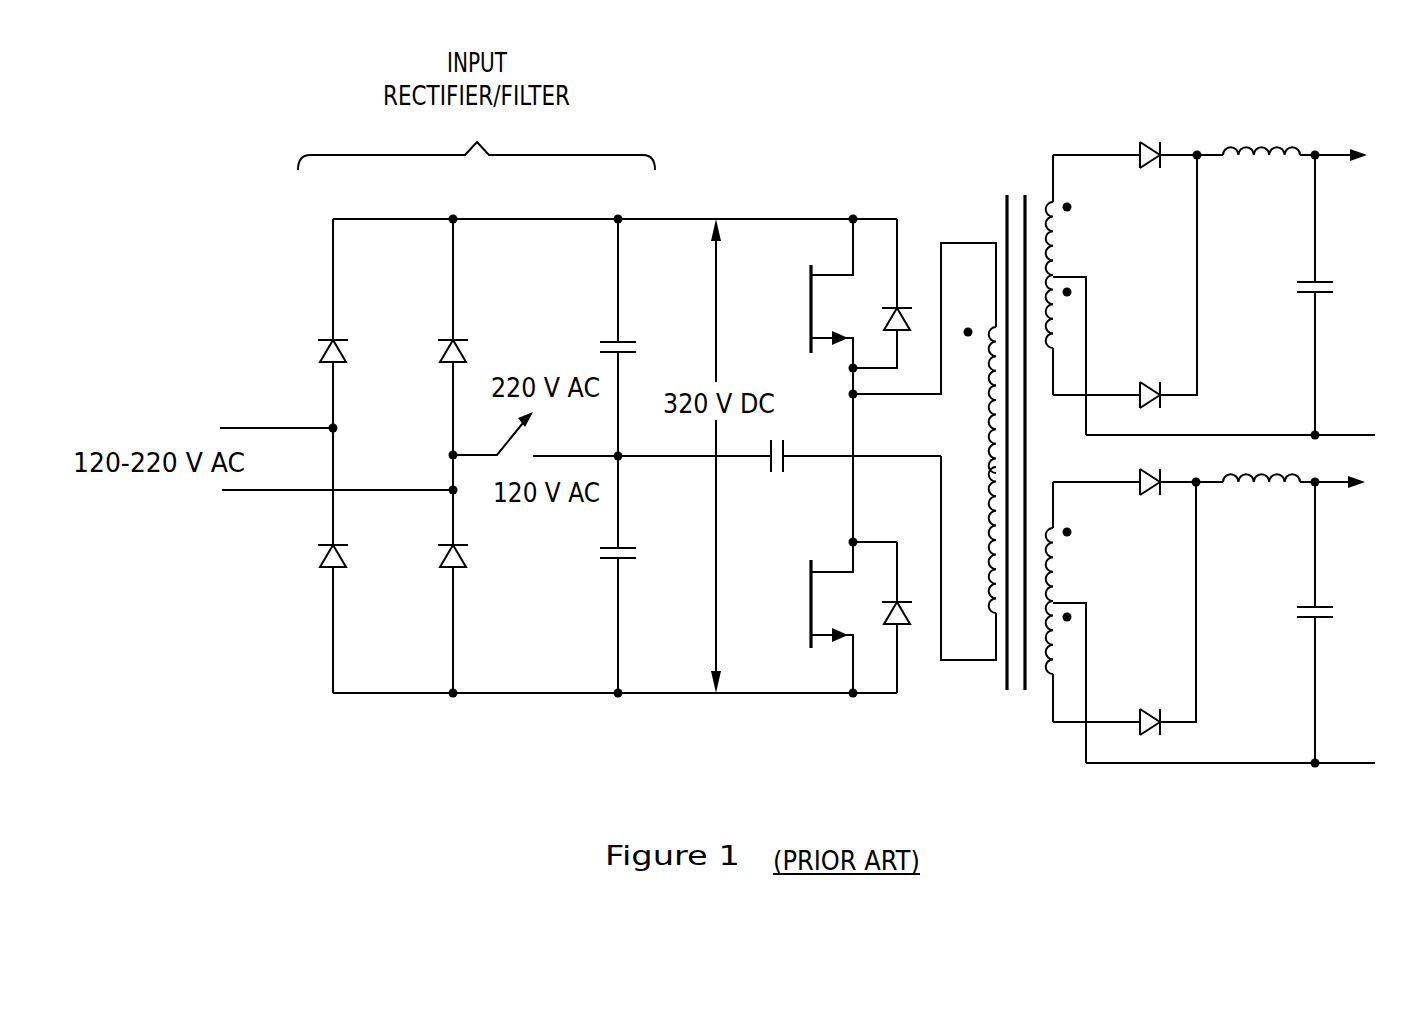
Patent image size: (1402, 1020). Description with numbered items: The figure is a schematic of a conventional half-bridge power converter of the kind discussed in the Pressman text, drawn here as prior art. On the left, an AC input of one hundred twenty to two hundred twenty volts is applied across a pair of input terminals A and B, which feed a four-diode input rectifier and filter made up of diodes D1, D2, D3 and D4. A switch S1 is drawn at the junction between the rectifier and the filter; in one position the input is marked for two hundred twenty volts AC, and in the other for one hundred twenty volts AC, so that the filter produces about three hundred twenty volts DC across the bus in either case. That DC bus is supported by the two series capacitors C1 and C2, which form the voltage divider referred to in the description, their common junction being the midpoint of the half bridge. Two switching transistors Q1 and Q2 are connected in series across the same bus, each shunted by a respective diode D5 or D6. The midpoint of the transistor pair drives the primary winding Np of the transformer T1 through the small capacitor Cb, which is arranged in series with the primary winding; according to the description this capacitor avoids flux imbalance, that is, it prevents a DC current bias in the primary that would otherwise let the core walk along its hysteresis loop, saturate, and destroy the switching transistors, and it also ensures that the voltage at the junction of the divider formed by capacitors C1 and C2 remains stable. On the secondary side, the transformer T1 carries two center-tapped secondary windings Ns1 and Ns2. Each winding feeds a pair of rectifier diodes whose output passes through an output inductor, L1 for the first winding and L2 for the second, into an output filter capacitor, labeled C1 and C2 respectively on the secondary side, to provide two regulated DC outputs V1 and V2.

The AC input terminal A is at (279, 415).
The AC input terminal B is at (340, 506).
The input rectifier diode D1 is at (351, 353).
The input rectifier diode D2 is at (351, 558).
The input rectifier diode D3 is at (471, 353).
The input rectifier diode D4 is at (471, 558).
The voltage select switch S1 is at (610, 436).
The capacitor C1 is at (984, 351).
The capacitor C2 is at (984, 622).
The upper switching transistor Q1 is at (811, 293).
The lower switching transistor Q2 is at (834, 617).
The freewheeling diode D5 is at (891, 296).
The freewheeling diode D6 is at (908, 617).
The capacitor Cb is at (854, 479).
The transformer primary winding Np is at (924, 451).
The transformer T1 is at (1019, 424).
The first secondary winding Ns1 is at (1088, 295).
The second secondary winding Ns2 is at (1088, 622).
The output inductor L1 is at (1256, 175).
The output inductor L2 is at (1255, 502).
The first output voltage V1 is at (1240, 287).
The second output voltage V2 is at (1240, 616).